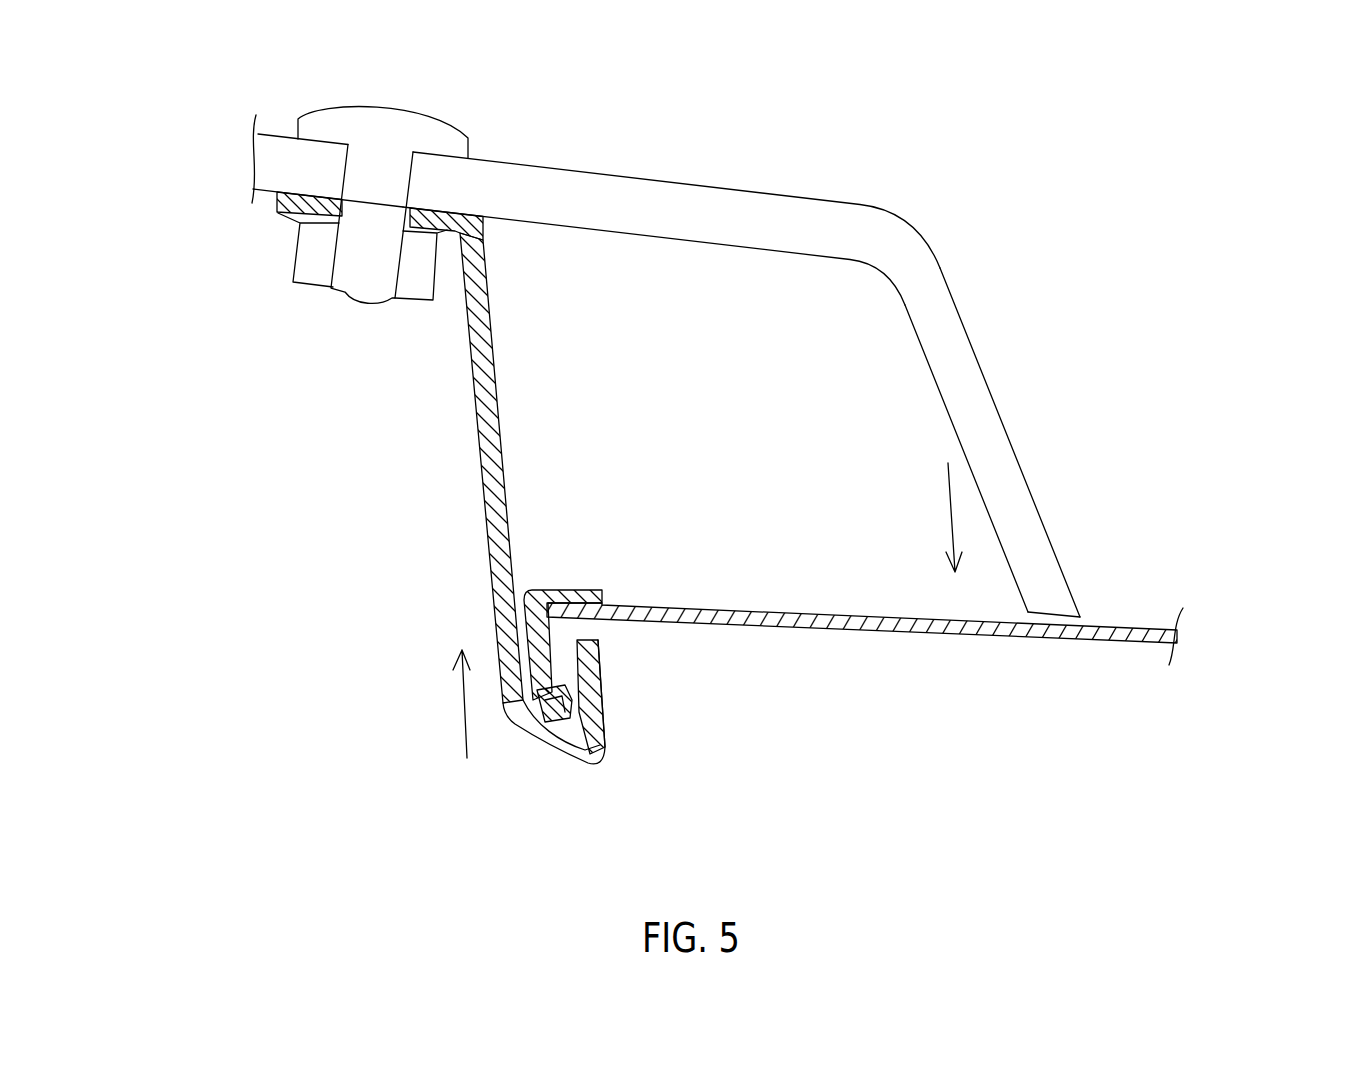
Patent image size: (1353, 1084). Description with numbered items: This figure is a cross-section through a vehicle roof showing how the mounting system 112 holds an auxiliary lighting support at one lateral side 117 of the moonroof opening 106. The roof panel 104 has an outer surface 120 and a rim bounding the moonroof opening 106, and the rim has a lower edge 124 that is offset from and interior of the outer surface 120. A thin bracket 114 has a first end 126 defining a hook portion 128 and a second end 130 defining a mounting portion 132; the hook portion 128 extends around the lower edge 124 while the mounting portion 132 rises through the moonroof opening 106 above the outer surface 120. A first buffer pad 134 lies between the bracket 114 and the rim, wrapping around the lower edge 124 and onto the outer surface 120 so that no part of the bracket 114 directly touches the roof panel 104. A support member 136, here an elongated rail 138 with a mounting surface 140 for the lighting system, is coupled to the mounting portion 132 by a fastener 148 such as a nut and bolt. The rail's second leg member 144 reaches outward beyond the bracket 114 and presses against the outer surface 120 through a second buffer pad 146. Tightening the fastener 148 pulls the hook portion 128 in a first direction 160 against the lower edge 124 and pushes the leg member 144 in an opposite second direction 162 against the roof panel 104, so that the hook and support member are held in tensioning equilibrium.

The roof panel 104 is at (1184, 640).
The moonroof opening 106 is at (372, 555).
The mounting system 112 is at (240, 152).
The bracket 114 is at (501, 395).
The lateral side 117 is at (989, 263).
The outer surface 120 is at (690, 604).
The lower edge 124 is at (573, 737).
The first end 126 is at (601, 665).
The hook portion 128 is at (625, 754).
The second end 130 is at (277, 213).
The mounting portion 132 is at (509, 229).
The first buffer pad 134 is at (578, 590).
The support member 136 is at (539, 151).
The elongated rail 138 is at (487, 158).
The mounting surface 140 is at (270, 133).
The second leg member 144 is at (1001, 422).
The second buffer pad 146 is at (1081, 612).
The fastener 148 is at (415, 110).
The first direction 160 is at (460, 702).
The second direction 162 is at (950, 513).